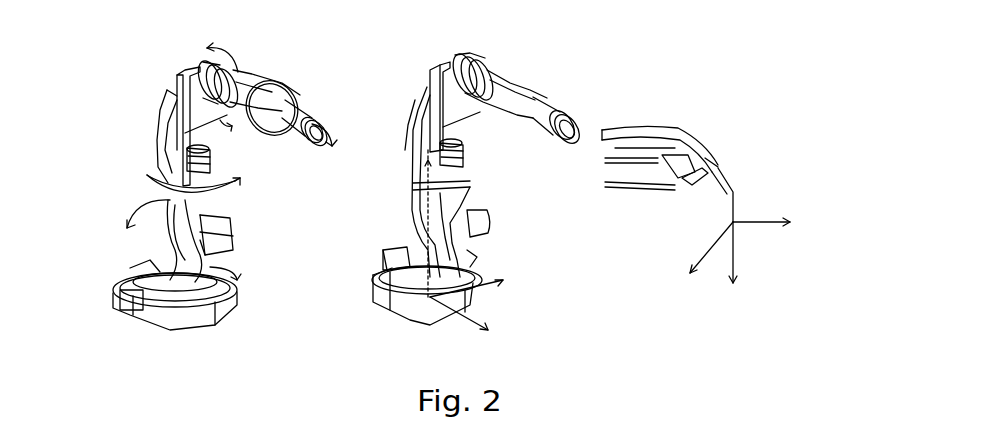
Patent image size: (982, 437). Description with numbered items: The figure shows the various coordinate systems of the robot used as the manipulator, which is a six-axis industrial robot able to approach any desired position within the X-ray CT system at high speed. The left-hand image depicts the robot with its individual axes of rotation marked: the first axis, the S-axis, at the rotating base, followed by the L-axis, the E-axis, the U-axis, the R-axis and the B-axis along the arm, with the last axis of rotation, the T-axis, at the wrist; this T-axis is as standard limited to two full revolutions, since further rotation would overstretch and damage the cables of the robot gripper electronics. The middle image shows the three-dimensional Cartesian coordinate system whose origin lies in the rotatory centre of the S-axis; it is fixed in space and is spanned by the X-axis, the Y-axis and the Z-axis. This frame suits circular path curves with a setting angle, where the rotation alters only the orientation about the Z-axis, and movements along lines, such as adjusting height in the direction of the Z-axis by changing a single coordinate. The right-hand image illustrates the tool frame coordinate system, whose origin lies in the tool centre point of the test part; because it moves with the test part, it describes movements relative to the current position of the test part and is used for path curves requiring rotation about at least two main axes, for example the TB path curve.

The U-axis rotation U-axis is at (204, 67).
The R-axis rotation R-axis is at (280, 101).
The B-axis rotation B-axis is at (325, 116).
The last axis of rotation T-axis is at (301, 152).
The E-axis rotation E-axis is at (160, 178).
The L-axis rotation L-axis is at (117, 213).
The first axis S-axis is at (210, 295).
The element Z-axis is at (389, 225).
The element Y-axis is at (501, 285).
The element X-axis is at (465, 305).